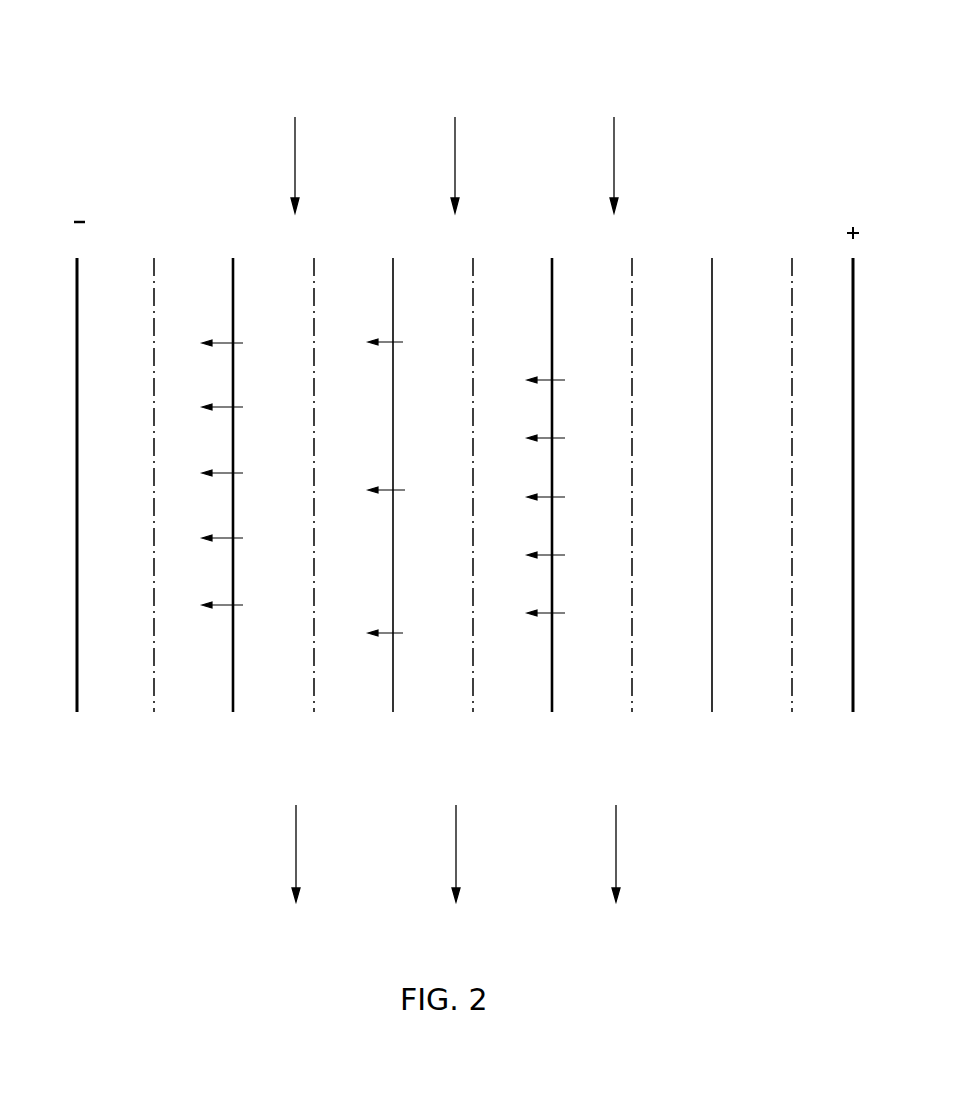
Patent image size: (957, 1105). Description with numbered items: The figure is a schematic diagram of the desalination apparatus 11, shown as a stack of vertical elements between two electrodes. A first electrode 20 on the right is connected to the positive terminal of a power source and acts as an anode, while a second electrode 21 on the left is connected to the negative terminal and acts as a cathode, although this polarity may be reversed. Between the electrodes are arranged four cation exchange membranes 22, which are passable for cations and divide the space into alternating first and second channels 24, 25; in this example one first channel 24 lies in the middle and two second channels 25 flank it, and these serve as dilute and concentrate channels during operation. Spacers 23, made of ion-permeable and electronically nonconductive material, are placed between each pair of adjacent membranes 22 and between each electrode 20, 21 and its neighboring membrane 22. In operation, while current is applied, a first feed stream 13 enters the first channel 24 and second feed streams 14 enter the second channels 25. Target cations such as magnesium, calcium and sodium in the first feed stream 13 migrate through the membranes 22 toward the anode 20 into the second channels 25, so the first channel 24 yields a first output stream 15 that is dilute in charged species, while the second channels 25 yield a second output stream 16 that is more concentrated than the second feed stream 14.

The desalination apparatus 11 is at (212, 100).
The first feed stream 13 is at (455, 163).
The second feed stream 14 is at (295, 167).
The first output stream 15 is at (456, 852).
The second output stream 16 is at (296, 855).
The first electrode 20 is at (853, 670).
The second electrode 21 is at (76, 710).
The cation exchange membrane 22 is at (233, 690).
The spacer 23 is at (153, 692).
The first channel 24 is at (434, 258).
The second channel 25 is at (275, 270).